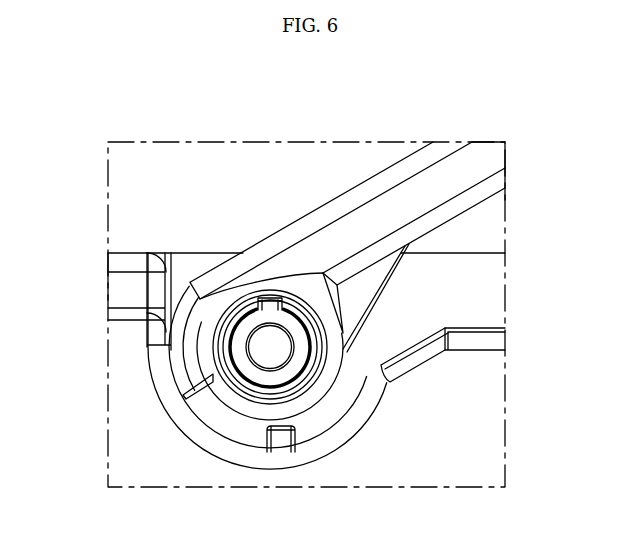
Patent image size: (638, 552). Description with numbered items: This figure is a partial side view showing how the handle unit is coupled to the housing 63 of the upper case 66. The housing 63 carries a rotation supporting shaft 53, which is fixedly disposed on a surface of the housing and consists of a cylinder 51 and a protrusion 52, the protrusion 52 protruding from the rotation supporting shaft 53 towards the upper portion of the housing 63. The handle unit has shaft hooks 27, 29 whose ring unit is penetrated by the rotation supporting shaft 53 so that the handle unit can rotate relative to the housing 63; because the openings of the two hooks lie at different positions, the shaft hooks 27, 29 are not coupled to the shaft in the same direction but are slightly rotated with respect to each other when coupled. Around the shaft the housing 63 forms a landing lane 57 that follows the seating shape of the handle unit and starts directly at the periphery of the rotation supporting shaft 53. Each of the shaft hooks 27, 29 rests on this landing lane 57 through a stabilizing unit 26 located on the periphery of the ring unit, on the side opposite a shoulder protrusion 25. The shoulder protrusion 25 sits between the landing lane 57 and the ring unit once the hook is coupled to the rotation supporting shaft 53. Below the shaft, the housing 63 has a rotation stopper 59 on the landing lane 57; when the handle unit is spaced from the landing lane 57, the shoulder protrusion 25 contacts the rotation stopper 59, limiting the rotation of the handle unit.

The shoulder protrusion 25 is at (203, 395).
The stabilizing unit 26 is at (393, 275).
The shaft hook 27 is at (347, 216).
The shaft hook 29 is at (412, 190).
The cylinder 51 is at (240, 354).
The protrusion 52 is at (268, 303).
The rotation supporting shaft 53 is at (169, 304).
The landing lane 57 is at (408, 368).
The rotation stopper 59 is at (283, 436).
The housing 63 is at (523, 334).
The upper case 66 is at (487, 368).